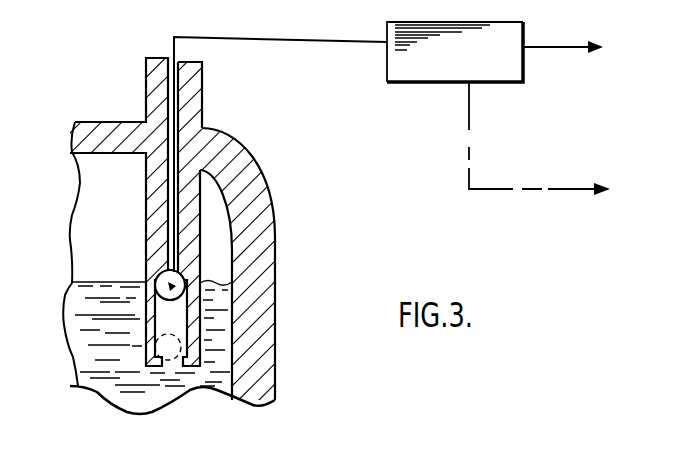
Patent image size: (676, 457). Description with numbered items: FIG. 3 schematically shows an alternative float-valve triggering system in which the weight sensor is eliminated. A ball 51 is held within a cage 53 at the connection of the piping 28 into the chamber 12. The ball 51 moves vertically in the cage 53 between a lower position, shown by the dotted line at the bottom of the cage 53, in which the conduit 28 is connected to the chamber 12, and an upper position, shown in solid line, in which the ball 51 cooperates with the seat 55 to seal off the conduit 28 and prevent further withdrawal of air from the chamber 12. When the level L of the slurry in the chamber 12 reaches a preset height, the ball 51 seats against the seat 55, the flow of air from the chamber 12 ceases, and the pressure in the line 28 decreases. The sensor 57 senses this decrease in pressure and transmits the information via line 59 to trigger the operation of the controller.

The chamber 12 is at (262, 303).
The piping 28 is at (262, 40).
The ball 51 is at (273, 246).
The cage 53 is at (188, 372).
The seat 55 is at (270, 182).
The sensor 57 is at (435, 72).
The line 59 is at (500, 190).
The level of the slurry L is at (83, 279).